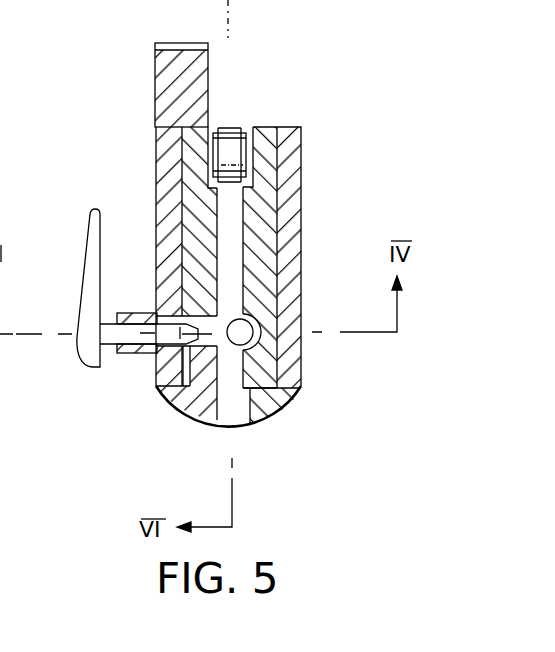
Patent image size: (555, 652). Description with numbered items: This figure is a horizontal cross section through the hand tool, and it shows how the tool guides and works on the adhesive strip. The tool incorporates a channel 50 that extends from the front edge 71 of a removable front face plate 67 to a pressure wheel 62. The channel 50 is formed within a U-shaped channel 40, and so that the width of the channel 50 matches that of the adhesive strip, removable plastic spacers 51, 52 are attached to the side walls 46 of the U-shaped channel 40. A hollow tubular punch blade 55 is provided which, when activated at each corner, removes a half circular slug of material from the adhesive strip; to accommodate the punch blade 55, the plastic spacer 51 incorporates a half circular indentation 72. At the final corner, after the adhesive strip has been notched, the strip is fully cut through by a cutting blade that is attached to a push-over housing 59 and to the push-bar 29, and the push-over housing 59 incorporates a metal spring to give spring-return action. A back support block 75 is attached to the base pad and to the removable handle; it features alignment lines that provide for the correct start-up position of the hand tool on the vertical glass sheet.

The back support block 75 is at (165, 73).
The pressure wheel 62 is at (226, 133).
The side walls 46 is at (170, 148).
The plastic spacer 52 is at (199, 200).
The channel 50 is at (232, 222).
The plastic spacer 51 is at (263, 240).
The half circular indentation 72 is at (253, 330).
The U-shaped channel 40 is at (292, 353).
The hollow tubular punch blade 55 is at (275, 380).
The removable front face plate 67 is at (278, 413).
The front edge 71 is at (238, 430).
The push-over housing 59 is at (146, 336).
The push-bar 29 is at (90, 296).